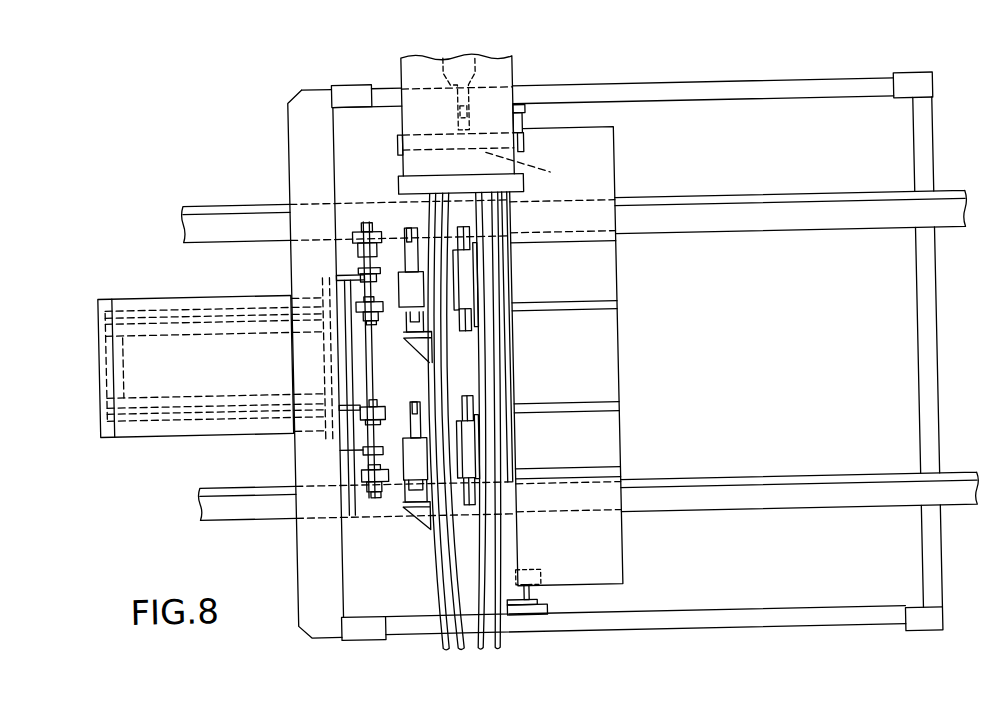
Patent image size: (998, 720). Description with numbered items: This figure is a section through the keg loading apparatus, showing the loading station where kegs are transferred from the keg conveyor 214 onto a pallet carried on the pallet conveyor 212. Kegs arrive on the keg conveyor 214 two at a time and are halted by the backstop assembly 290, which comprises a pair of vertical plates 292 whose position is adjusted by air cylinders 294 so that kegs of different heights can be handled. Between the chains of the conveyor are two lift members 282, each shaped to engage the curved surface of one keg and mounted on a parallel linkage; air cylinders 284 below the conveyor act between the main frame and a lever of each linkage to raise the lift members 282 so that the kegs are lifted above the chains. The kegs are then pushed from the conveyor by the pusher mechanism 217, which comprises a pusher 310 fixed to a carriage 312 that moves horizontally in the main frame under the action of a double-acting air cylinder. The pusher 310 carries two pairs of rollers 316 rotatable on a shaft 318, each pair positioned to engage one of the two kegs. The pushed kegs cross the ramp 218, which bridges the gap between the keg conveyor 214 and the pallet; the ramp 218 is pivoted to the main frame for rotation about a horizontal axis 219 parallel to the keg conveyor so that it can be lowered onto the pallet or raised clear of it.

The pallet conveyor 212 is at (856, 213).
The keg conveyor 214 is at (440, 567).
The pusher mechanism 217 is at (154, 298).
The ramp 218 is at (590, 382).
The horizontal axis 219 is at (533, 594).
The lift member 282 is at (467, 275).
The air cylinder 284 is at (413, 297).
The backstop assembly 290 is at (502, 78).
The vertical plate 292 is at (541, 171).
The air cylinder 294 is at (468, 60).
The pusher 310 is at (331, 440).
The carriage 312 is at (230, 297).
The rollers 316 is at (359, 232).
The shaft 318 is at (349, 382).